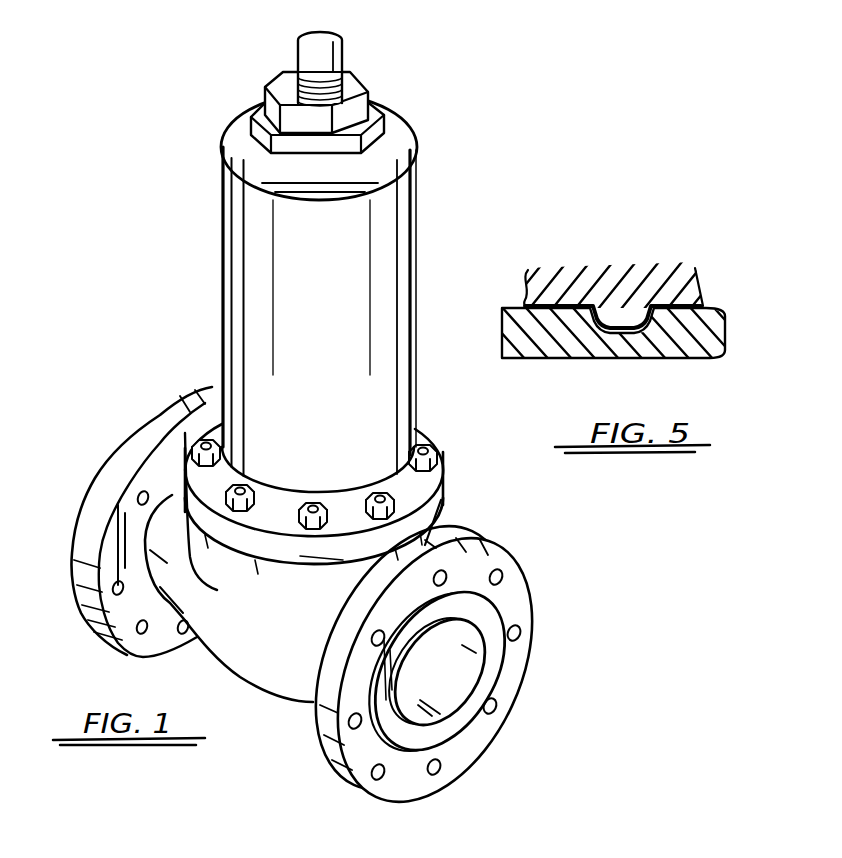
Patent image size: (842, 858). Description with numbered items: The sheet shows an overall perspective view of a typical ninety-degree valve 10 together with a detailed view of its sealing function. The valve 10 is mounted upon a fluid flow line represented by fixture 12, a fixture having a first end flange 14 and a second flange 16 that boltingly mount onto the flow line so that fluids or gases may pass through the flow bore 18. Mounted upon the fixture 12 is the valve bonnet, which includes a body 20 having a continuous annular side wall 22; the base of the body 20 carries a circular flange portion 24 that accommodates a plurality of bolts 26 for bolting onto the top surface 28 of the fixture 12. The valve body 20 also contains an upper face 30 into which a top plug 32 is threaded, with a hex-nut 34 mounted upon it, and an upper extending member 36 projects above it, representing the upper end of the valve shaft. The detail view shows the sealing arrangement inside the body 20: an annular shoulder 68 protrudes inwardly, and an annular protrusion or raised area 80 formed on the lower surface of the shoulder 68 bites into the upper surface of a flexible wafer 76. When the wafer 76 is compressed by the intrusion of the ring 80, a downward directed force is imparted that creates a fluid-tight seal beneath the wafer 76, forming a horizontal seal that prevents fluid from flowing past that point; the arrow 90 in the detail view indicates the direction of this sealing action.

In FIG. 1, the valve 10 is at (445, 210).
In FIG. 1, the fixture 12 is at (166, 588).
In FIG. 1, the first end flange 14 is at (90, 527).
In FIG. 1, the second flange 16 is at (520, 598).
In FIG. 1, the flow bore 18 is at (448, 673).
In FIG. 1, the body 20 is at (255, 299).
In FIG. 1, the annular side wall 22 is at (417, 312).
In FIG. 1, the circular flange portion 24 is at (418, 487).
In FIG. 1, the bolts 26 is at (424, 440).
In FIG. 1, the top surface 28 is at (207, 590).
In FIG. 1, the upper face 30 is at (234, 140).
In FIG. 1, the top plug 32 is at (388, 108).
In FIG. 1, the hex-nut 34 is at (352, 84).
In FIG. 1, the upper extending member 36 is at (333, 33).
In FIG. 5, the annular shoulder 68 is at (569, 282).
In FIG. 5, the flexible wafer 76 is at (690, 328).
In FIG. 5, the annular raised portion 80 is at (622, 320).
In FIG. 5, the pressure direction arrow 90 is at (714, 298).